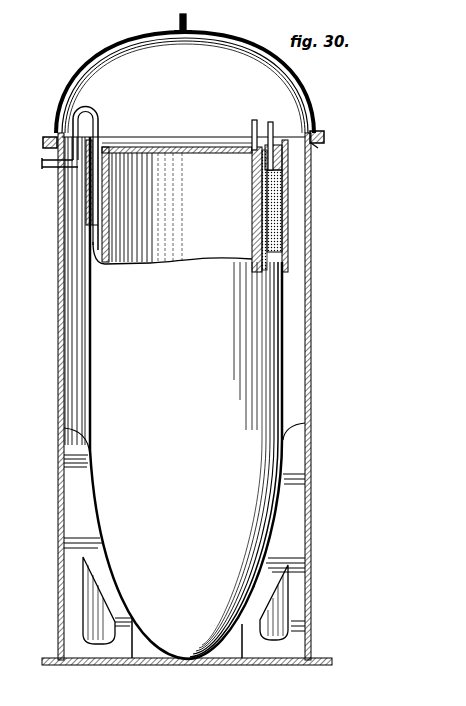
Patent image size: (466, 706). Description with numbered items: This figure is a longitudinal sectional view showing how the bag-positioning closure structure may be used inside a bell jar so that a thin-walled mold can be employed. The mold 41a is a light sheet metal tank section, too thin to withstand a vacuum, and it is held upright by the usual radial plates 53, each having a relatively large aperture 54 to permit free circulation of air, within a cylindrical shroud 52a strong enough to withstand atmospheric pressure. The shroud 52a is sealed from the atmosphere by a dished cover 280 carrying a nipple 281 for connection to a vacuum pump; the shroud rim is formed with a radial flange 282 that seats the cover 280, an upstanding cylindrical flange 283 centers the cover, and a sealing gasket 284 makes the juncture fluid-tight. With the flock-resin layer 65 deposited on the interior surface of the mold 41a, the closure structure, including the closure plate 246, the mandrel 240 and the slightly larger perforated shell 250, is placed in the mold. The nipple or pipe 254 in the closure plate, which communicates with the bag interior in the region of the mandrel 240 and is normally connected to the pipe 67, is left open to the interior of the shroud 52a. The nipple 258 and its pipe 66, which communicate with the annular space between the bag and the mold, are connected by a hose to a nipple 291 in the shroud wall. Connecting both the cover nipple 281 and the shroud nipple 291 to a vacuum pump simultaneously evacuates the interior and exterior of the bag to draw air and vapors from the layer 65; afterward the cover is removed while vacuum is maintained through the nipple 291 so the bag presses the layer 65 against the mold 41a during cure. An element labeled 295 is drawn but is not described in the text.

The dished cover 280 is at (232, 50).
The nipple 281 is at (178, 19).
The cylindrical shroud 52a is at (312, 348).
The nipple 254 is at (217, 137).
The mold 41a is at (190, 431).
The radial plates 53 is at (303, 452).
The aperture 54 is at (85, 619).
The closure plate 246 is at (163, 153).
The mandrel 240 is at (252, 218).
The perforated shell 250 is at (256, 239).
The flock-resin layer 65 is at (256, 236).
The cover plate 295 is at (178, 143).
The nipple 258 is at (99, 142).
The pipe 66 is at (95, 121).
The nipple 291 is at (48, 167).
The pipe 67 is at (254, 121).
The upstanding cylindrical flange 283 is at (305, 128).
The sealing gasket 284 is at (324, 138).
The radial flange 282 is at (318, 147).